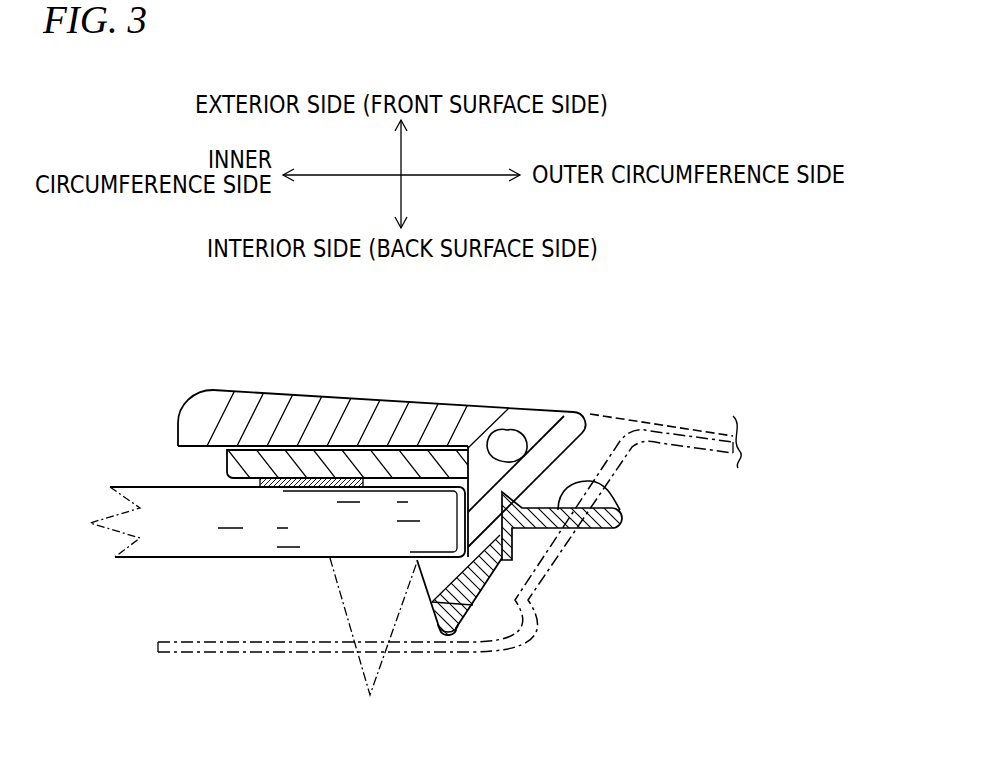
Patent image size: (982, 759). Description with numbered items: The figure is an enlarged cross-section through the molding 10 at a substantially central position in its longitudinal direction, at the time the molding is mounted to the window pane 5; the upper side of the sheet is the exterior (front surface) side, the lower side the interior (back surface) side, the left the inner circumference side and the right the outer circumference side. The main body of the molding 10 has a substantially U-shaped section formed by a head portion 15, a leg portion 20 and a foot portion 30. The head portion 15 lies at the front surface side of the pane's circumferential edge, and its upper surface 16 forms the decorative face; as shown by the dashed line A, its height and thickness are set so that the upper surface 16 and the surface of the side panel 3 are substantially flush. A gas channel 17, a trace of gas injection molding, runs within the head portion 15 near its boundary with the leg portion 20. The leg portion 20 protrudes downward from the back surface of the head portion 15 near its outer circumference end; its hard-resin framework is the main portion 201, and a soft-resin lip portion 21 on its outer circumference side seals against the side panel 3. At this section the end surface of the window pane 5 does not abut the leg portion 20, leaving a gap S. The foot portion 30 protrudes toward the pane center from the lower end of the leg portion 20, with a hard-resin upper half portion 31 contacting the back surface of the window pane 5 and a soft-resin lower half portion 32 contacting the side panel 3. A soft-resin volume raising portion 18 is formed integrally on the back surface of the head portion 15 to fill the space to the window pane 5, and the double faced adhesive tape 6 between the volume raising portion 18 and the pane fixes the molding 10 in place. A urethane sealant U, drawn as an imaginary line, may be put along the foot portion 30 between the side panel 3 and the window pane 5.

The molding 10 is at (359, 442).
The head portion 15 is at (383, 413).
The upper surface 16 is at (307, 391).
The gas channel 17 is at (507, 440).
The volume raising portion 18 is at (235, 461).
The double faced adhesive tape 6 is at (283, 487).
The window pane 5 is at (208, 547).
The gap S is at (458, 539).
The leg portion 20 is at (556, 531).
The main portion 201 is at (479, 514).
The lip portion 21 is at (577, 483).
The foot portion 30 is at (462, 582).
The upper half portion 31 is at (433, 593).
The lower half portion 32 is at (451, 630).
The urethane sealant U is at (341, 599).
The side panel 3 is at (180, 655).
The dashed line A is at (613, 418).